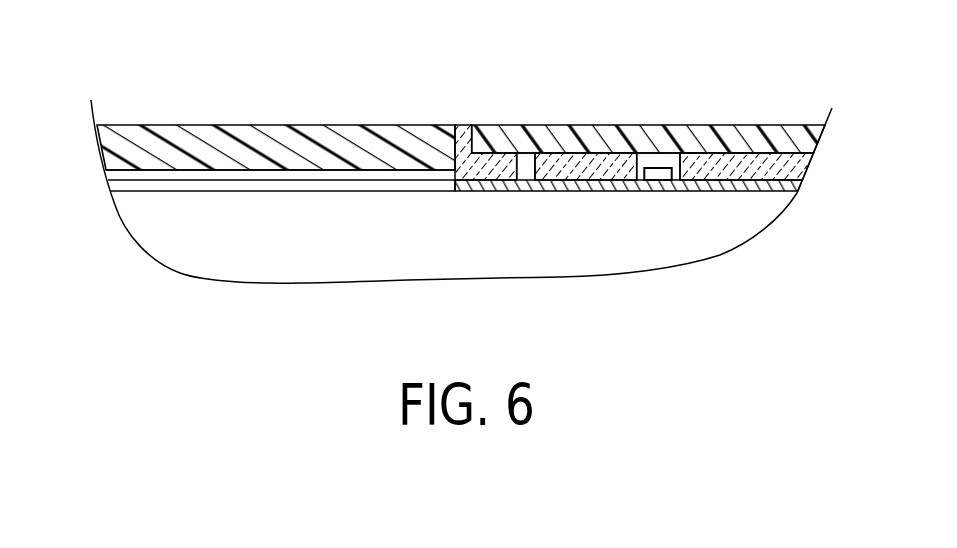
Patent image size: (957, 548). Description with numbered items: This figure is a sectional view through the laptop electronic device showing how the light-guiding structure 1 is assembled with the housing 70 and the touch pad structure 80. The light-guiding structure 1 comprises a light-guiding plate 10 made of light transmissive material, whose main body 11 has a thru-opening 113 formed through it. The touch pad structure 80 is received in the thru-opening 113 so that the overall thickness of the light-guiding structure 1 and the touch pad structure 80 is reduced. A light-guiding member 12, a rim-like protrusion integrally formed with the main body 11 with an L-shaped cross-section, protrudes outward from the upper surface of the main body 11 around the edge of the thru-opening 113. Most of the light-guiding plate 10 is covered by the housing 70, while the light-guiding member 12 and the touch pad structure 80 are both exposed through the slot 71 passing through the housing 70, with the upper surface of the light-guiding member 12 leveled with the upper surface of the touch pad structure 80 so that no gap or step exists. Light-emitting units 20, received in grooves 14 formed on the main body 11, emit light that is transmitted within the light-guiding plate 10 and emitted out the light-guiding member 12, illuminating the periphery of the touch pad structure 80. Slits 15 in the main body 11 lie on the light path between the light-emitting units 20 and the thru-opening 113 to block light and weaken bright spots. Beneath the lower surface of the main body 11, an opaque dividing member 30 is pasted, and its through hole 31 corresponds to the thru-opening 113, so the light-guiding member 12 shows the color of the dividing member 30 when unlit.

The light-guiding structure 1 is at (738, 208).
The light-guiding plate 10 is at (593, 187).
The main body 11 is at (797, 172).
The thru-opening 113 is at (283, 191).
The light-guiding member 12 is at (460, 125).
The grooves 14 is at (672, 170).
The slits 15 is at (532, 153).
The light-emitting units 20 is at (653, 165).
The dividing member 30 is at (668, 192).
The through hole 31 is at (442, 192).
The housing 70 is at (747, 123).
The slot 71 is at (497, 150).
The touch pad structure 80 is at (308, 120).